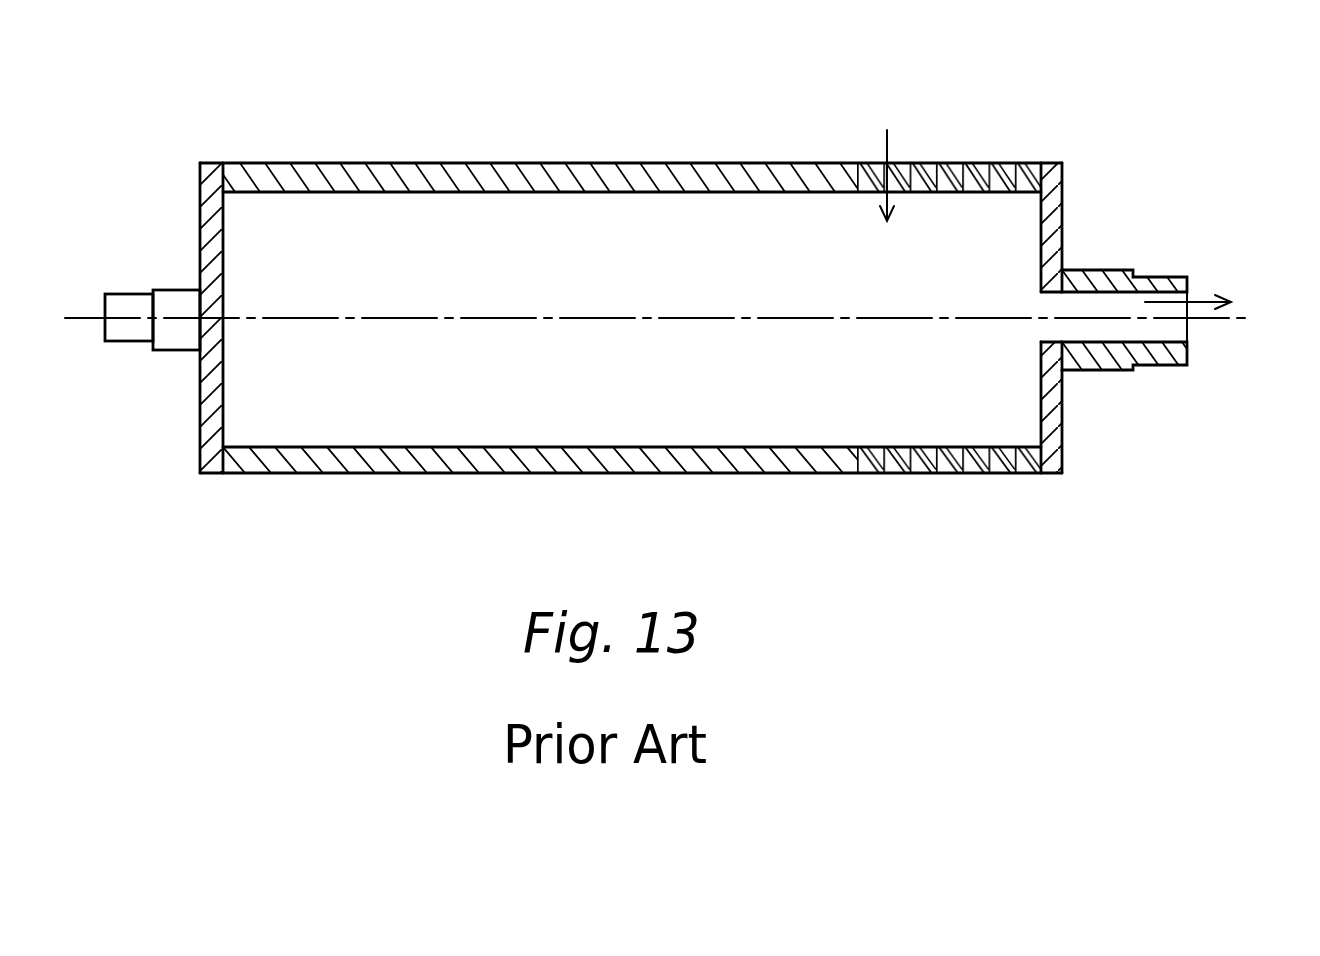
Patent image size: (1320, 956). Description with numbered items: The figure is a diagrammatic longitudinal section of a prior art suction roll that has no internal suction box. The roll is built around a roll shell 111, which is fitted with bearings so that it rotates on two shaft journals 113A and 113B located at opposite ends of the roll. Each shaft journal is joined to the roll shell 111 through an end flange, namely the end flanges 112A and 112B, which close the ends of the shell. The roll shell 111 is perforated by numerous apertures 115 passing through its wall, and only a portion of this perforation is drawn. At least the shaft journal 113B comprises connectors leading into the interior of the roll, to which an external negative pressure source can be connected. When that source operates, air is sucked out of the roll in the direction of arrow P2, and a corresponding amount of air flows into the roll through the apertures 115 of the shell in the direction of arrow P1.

The roll shell 111 is at (630, 170).
The apertures 115 is at (1027, 161).
The end flange 112A is at (211, 417).
The end flange 112B is at (1064, 413).
The shaft journal 113A is at (167, 300).
The shaft journal 113B is at (1108, 276).
The arrow P1 is at (887, 140).
The arrow P2 is at (1200, 298).